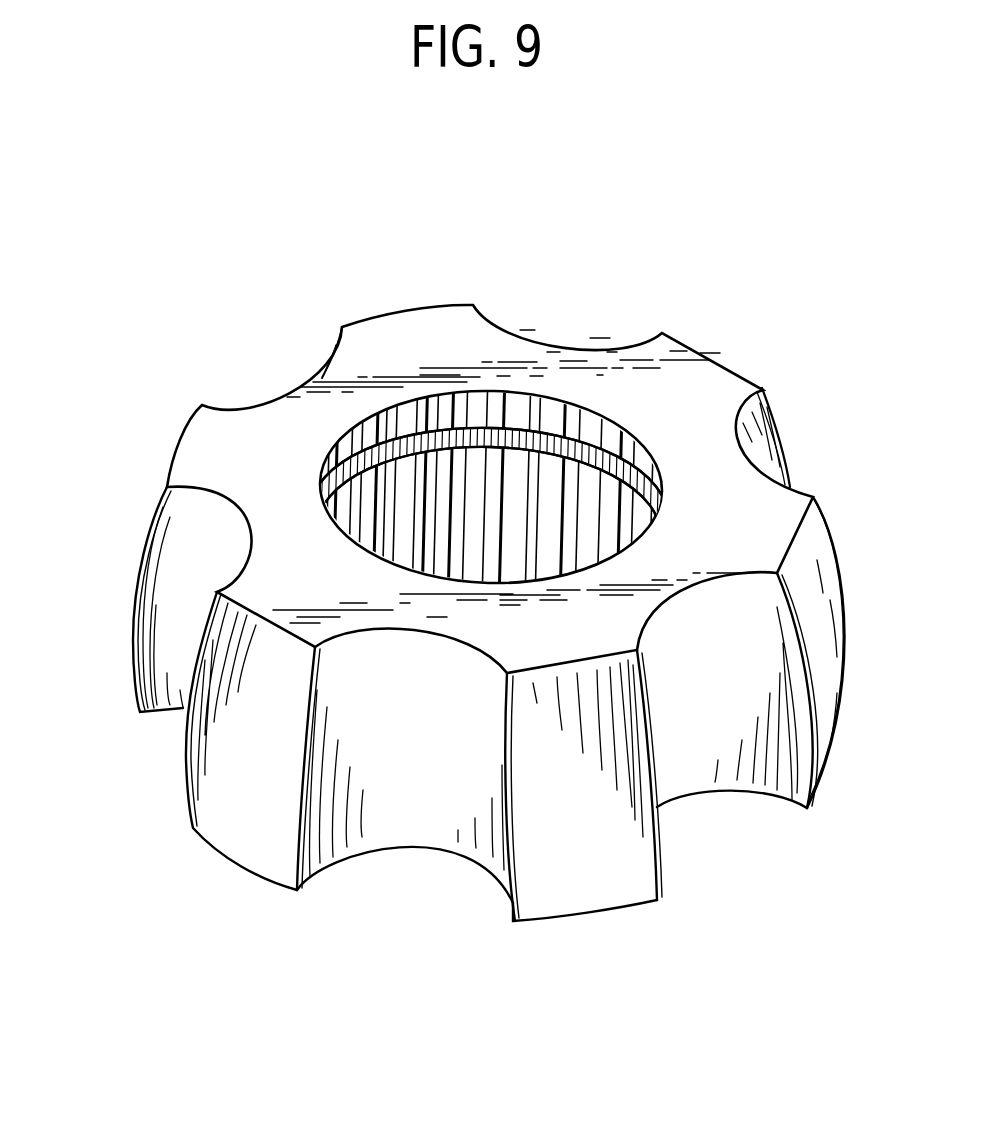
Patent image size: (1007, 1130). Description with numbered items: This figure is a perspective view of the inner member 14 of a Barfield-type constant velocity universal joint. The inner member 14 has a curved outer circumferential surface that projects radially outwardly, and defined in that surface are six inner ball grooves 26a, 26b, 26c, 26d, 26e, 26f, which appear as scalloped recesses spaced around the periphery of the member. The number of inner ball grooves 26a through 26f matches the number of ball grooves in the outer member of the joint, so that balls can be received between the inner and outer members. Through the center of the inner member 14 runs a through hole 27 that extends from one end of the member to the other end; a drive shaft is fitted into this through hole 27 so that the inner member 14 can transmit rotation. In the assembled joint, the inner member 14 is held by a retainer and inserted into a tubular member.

The inner member 14 is at (292, 242).
The inner ball groove 26a is at (400, 780).
The inner ball groove 26b is at (190, 553).
The inner ball groove 26c is at (293, 390).
The inner ball groove 26d is at (562, 346).
The inner ball groove 26e is at (770, 472).
The inner ball groove 26f is at (687, 733).
The through hole 27 is at (367, 508).